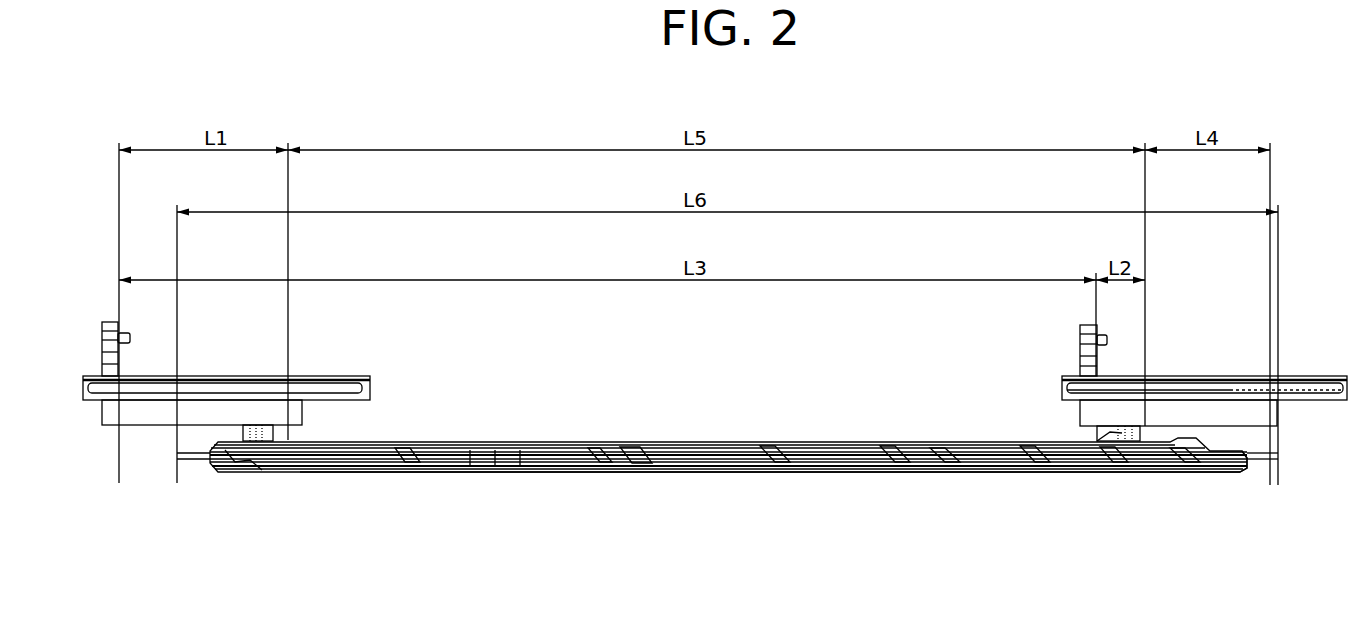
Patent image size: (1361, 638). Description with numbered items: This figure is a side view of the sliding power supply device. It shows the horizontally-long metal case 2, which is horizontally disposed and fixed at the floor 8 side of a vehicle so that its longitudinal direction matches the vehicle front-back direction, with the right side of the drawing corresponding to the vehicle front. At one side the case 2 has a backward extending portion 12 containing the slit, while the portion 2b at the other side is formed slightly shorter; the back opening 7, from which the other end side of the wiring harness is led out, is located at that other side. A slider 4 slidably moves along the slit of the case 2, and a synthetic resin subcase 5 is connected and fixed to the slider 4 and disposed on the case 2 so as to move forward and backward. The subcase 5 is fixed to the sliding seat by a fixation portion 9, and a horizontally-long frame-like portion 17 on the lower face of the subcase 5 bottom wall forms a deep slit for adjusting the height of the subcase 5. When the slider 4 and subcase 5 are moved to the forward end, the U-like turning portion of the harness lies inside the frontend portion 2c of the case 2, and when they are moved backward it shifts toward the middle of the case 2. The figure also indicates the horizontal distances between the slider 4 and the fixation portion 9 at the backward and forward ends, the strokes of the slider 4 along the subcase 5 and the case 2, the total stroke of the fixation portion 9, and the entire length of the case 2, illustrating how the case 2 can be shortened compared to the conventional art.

The case 2 is at (848, 440).
The portion located at the other side of the case 2b is at (707, 467).
The frontend portion 2c is at (1240, 472).
The slider 4 is at (270, 433).
The subcase 5 is at (317, 375).
The back opening 7 is at (407, 466).
The floor 8 is at (946, 485).
The fixation portion 9 is at (101, 321).
The backward extending portion 12 is at (335, 473).
The frame-like portion 17 is at (1247, 412).